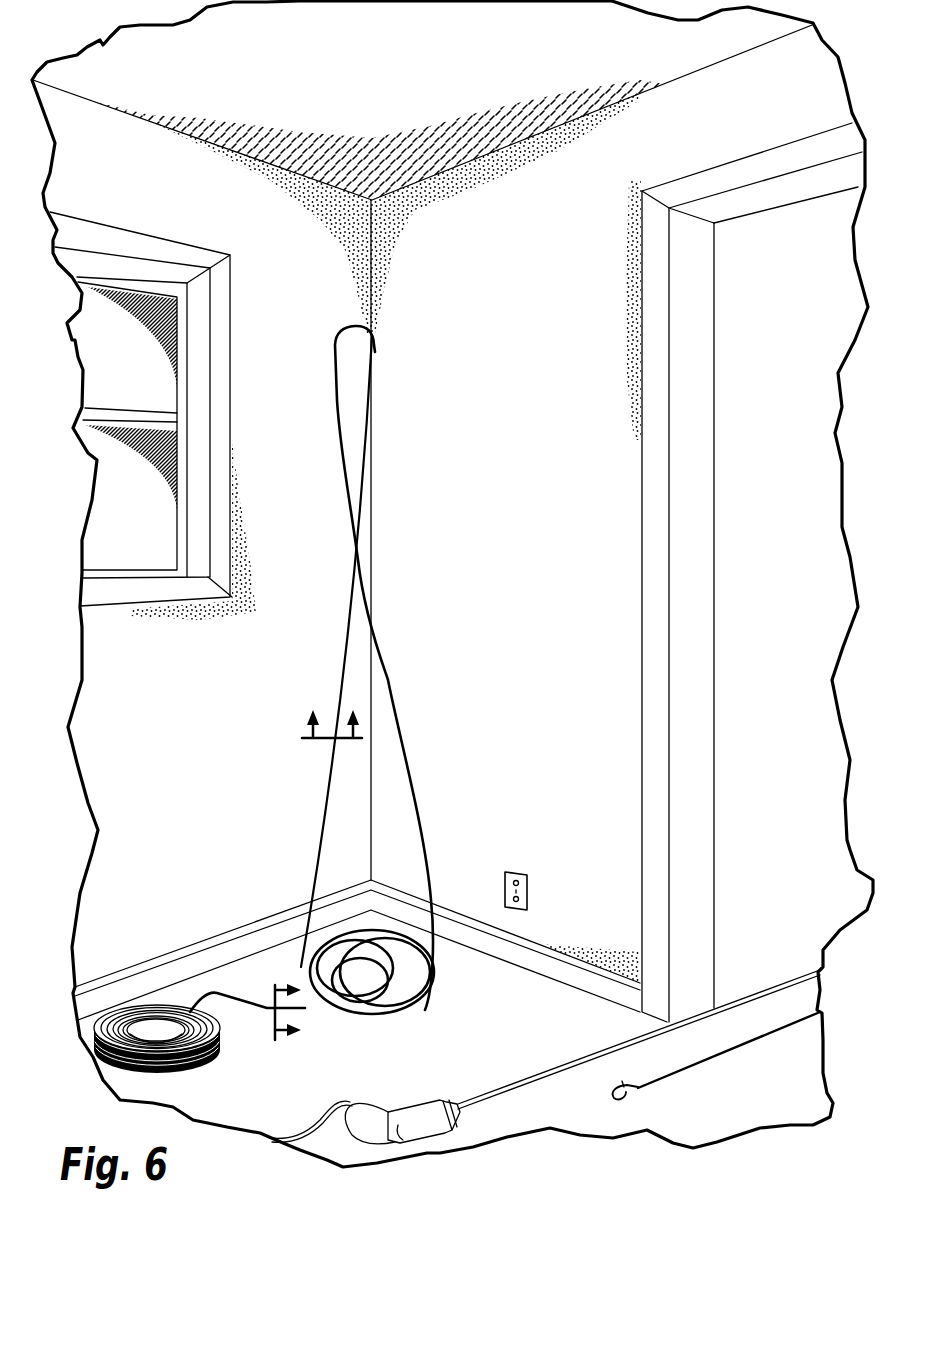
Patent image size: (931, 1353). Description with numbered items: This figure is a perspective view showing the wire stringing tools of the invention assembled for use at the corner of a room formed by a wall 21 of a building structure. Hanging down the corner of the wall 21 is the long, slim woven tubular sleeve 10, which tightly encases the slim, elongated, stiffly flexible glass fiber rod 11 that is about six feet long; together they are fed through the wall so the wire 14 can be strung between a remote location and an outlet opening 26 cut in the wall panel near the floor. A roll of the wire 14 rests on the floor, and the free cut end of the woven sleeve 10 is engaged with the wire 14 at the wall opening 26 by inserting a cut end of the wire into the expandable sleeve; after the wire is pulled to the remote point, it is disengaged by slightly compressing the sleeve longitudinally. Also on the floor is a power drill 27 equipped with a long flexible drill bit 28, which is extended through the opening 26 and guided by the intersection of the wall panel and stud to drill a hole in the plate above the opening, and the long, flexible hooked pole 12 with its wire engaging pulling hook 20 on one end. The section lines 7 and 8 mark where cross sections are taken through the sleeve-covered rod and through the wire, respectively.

The woven tubular sleeve 10 is at (402, 714).
The glass fiber rod 11 is at (328, 787).
The hooked pole 12 is at (737, 1045).
The wire 14 is at (203, 1060).
The pulling hook 20 is at (633, 1103).
The wall 21 is at (540, 444).
The outlet opening 26 is at (518, 873).
The power drill 27 is at (400, 1107).
The flexible drill bit 28 is at (527, 1080).
The section line 7- 7 is at (288, 1013).
The section line 8- 8 is at (334, 710).